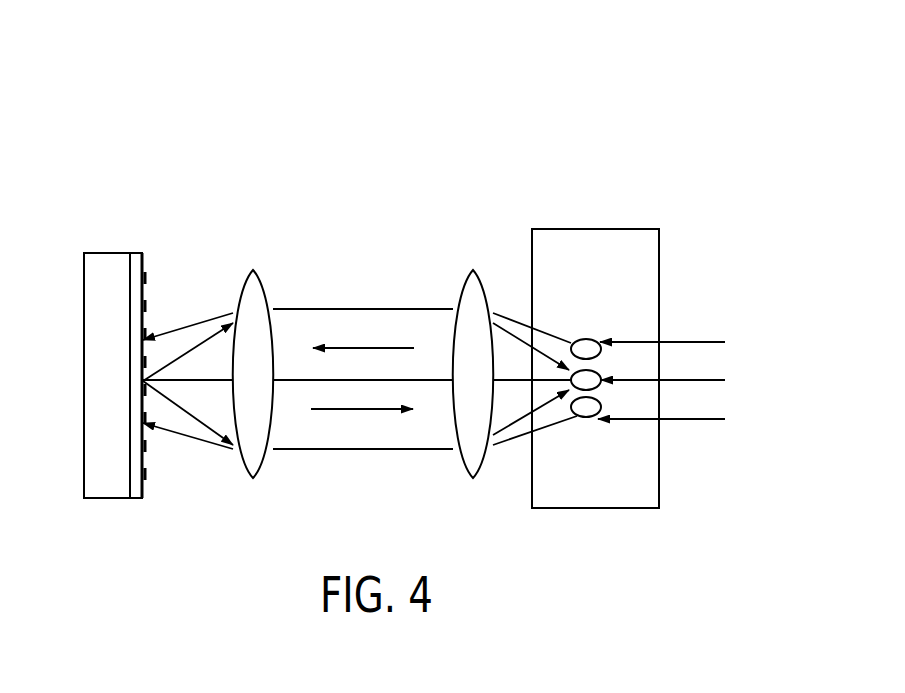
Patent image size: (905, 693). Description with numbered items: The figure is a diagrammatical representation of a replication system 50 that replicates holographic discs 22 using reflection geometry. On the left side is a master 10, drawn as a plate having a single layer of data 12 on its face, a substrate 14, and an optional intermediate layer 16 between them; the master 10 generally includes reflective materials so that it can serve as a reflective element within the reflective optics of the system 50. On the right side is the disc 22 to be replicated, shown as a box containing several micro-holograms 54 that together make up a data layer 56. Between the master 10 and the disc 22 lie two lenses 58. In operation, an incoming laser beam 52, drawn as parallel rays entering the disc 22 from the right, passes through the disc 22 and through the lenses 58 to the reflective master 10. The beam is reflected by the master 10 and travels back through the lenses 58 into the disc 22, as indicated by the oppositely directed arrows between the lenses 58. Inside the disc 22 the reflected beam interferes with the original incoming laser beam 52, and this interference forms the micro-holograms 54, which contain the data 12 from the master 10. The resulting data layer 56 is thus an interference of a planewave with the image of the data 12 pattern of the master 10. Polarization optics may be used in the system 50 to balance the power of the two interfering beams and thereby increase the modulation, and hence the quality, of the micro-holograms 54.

The master 10 is at (100, 252).
The data 12 is at (143, 491).
The substrate 14 is at (102, 499).
The intermediate layer 16 is at (132, 252).
The holographic disc 22 is at (622, 297).
The replication system 50 is at (655, 125).
The incoming laser beam 52 is at (683, 419).
The micro-holograms 54 is at (590, 419).
The data layer 56 is at (574, 275).
The lenses 58 is at (253, 478).